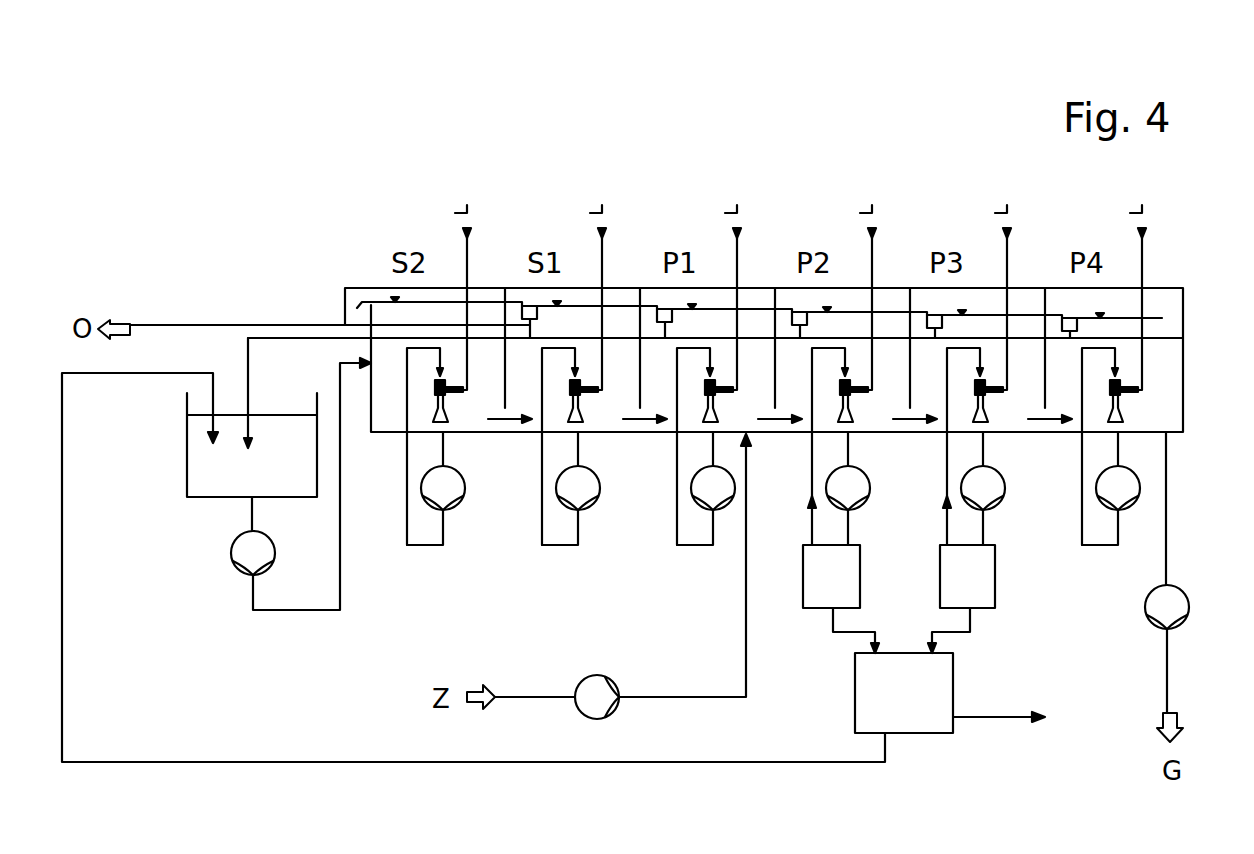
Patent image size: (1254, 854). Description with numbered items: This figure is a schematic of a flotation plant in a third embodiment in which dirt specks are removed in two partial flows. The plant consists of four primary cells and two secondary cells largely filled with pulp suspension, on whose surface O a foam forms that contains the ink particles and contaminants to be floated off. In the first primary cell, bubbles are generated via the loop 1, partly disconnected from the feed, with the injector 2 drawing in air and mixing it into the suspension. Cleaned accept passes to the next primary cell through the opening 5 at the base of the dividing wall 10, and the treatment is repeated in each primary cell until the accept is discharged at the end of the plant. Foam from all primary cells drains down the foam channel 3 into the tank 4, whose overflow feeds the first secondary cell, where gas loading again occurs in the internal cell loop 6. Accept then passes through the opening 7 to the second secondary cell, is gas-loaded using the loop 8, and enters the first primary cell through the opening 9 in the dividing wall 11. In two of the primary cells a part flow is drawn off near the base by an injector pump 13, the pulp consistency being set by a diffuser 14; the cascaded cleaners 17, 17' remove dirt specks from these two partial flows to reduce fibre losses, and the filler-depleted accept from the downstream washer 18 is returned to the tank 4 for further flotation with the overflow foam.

The loop 1 is at (697, 494).
The injector 2 is at (695, 446).
The foam channel 3 is at (759, 320).
The tank 4 is at (252, 445).
The opening 5 is at (778, 404).
The internal cell loop 6 is at (947, 466).
The opening 7 is at (509, 402).
The loop 8 is at (562, 488).
The opening 9 is at (644, 399).
The dividing wall 10 is at (775, 322).
The dividing wall 11 is at (640, 300).
The injector pump 13 is at (868, 493).
The diffuser 14 is at (850, 420).
The cleaner 17 is at (813, 607).
The cleaner 17' is at (994, 606).
The washer 18 is at (945, 720).
The surface O is at (1162, 318).